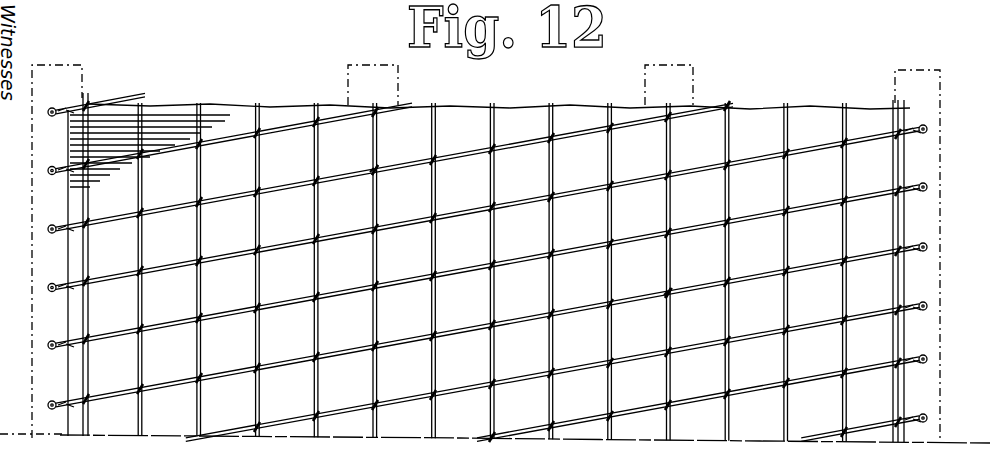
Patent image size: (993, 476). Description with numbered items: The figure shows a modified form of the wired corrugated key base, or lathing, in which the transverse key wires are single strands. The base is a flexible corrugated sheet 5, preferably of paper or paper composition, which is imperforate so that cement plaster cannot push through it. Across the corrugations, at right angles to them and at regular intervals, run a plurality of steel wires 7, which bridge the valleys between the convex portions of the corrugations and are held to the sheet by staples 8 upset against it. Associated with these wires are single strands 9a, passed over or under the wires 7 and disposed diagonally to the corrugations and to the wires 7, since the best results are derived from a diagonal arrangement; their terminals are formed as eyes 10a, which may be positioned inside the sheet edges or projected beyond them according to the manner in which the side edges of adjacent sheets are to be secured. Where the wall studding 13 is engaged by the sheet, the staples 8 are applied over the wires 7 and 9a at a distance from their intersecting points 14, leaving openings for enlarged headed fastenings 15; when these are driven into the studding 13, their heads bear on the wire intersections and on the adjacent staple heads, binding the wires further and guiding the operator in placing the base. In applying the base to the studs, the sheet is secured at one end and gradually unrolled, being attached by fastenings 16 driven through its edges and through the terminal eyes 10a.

The corrugated sheet 5 is at (179, 111).
The wires 7 is at (312, 219).
The staples 8 is at (317, 178).
The single strands 9a is at (221, 315).
The eyes 10a is at (46, 285).
The wall studding 13 is at (84, 84).
The intersecting points 14 is at (379, 166).
The enlarged headed fastenings 15 is at (369, 167).
The fastenings 16 is at (44, 405).